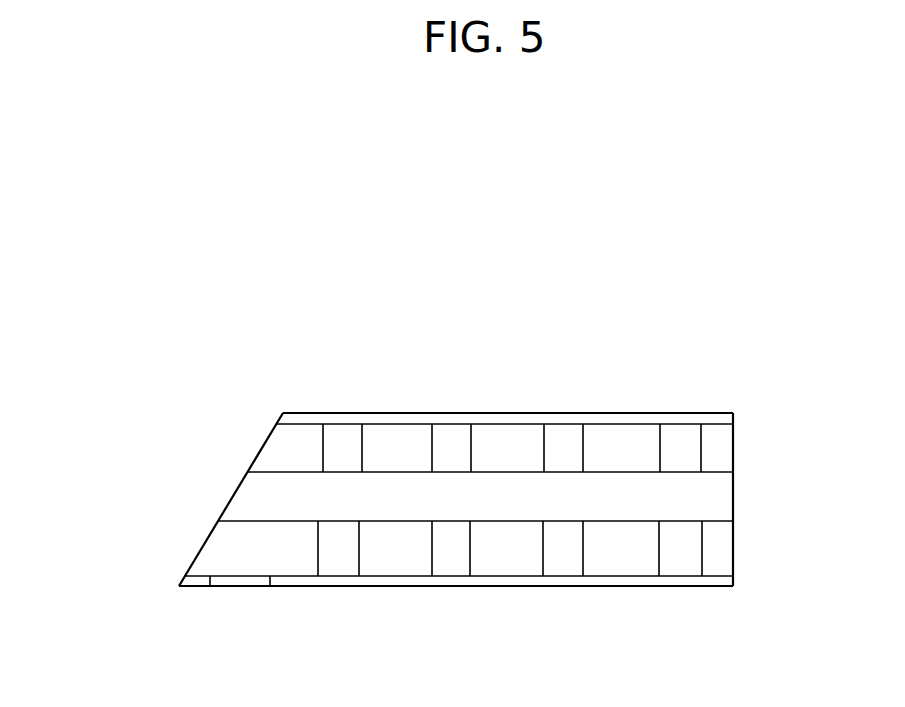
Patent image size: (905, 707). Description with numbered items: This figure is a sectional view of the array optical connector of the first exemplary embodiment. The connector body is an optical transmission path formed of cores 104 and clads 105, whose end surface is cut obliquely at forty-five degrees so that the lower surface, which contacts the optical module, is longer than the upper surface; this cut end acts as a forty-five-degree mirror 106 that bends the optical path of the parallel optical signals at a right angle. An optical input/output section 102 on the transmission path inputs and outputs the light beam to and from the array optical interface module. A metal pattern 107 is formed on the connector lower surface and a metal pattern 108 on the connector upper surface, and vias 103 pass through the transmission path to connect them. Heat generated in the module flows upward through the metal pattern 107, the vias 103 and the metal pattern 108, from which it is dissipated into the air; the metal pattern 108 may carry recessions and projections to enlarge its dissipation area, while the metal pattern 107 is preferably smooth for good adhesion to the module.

The optical input/output section 102 is at (238, 587).
The vias 103 is at (690, 462).
The cores 104 is at (410, 490).
The clads 105 is at (520, 458).
The 45-degree mirror 106 is at (202, 543).
The metal pattern 107 is at (590, 587).
The metal pattern 108 is at (617, 412).